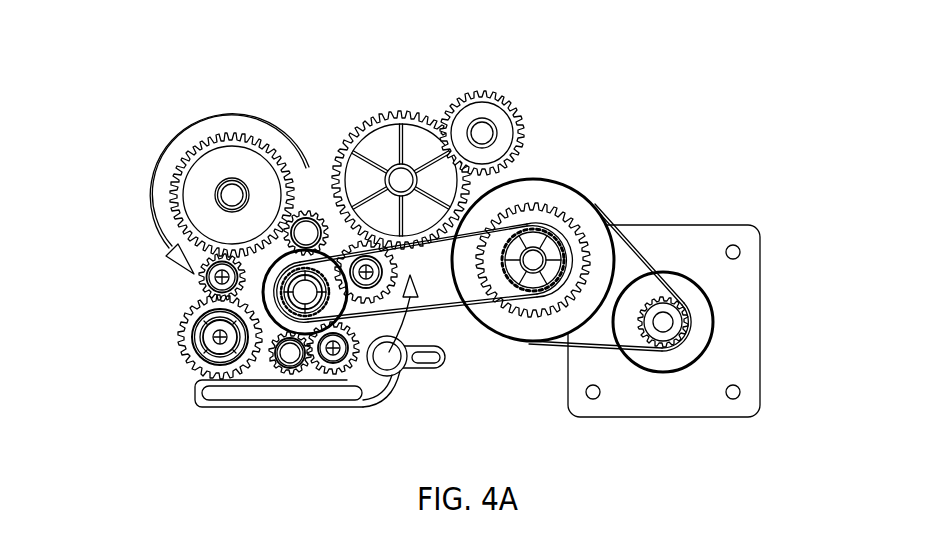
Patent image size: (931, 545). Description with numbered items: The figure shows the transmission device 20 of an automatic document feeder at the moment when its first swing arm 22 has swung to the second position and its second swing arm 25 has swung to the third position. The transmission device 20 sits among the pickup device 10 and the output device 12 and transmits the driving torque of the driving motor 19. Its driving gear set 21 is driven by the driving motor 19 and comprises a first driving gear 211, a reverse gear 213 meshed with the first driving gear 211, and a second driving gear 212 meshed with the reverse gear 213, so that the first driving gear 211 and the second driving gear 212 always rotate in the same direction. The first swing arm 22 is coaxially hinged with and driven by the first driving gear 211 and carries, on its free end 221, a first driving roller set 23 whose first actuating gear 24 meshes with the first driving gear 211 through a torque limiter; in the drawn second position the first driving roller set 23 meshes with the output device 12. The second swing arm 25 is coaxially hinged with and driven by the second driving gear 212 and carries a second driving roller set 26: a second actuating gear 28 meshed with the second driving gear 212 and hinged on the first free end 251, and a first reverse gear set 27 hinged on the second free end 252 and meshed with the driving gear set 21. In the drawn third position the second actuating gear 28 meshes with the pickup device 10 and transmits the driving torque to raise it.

The pickup device 10 is at (425, 153).
The output device 12 is at (195, 356).
The driving motor 19 is at (738, 326).
The transmission device 20 is at (136, 117).
The driving gear set 21 is at (397, 33).
The first driving gear 211 is at (237, 157).
The second driving gear 212 is at (365, 147).
The reverse gear 213 is at (305, 226).
The first swing arm 22 is at (188, 262).
The free end 221 is at (194, 296).
The first driving roller set 23 is at (178, 286).
The first actuating gear 24 is at (193, 268).
The second swing arm 25 is at (396, 371).
The first free end 251 is at (413, 277).
The second free end 252 is at (307, 382).
The second driving roller set 26 is at (352, 390).
The first reverse gear set 27 is at (287, 378).
The second actuating gear 28 is at (400, 260).